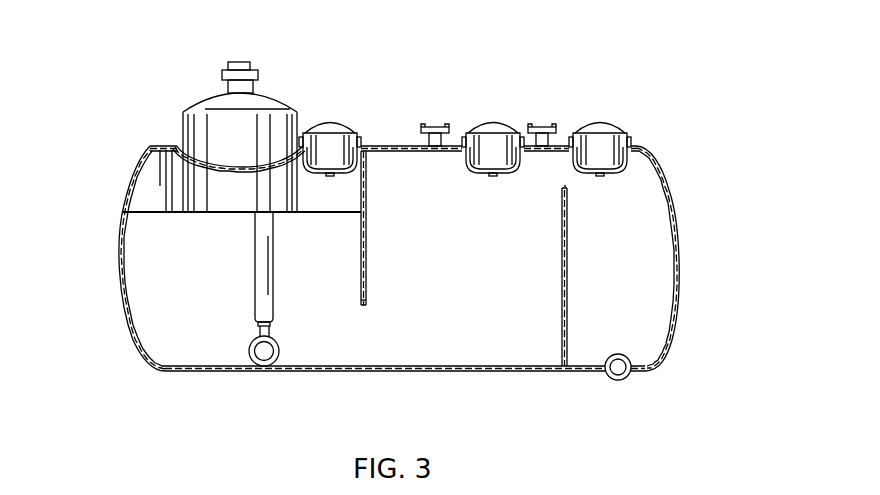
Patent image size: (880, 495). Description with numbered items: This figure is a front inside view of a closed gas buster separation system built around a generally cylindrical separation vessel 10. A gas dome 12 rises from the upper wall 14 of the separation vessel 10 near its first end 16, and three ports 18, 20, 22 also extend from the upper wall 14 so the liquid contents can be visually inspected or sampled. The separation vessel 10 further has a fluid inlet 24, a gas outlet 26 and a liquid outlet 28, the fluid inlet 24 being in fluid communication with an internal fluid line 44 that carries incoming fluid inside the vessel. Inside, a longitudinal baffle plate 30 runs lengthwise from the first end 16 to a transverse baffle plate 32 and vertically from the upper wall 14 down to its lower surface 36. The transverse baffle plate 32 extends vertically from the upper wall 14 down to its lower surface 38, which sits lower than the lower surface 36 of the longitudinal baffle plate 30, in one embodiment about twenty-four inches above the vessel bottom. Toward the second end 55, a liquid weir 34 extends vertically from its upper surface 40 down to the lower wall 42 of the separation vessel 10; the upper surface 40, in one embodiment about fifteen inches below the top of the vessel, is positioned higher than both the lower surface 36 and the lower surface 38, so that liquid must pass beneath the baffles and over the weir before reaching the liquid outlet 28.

The separation vessel 10 is at (137, 87).
The gas dome 12 is at (267, 94).
The upper wall 14 is at (401, 146).
The first end 16 is at (119, 286).
The port 18 is at (322, 122).
The port 20 is at (487, 122).
The port 22 is at (597, 122).
The fluid inlet 24 is at (264, 351).
The gas outlet 26 is at (241, 62).
The liquid outlet 28 is at (619, 367).
The longitudinal baffle plate 30 is at (148, 180).
The transverse baffle plate 32 is at (366, 165).
The liquid weir 34 is at (568, 342).
The lower surface 36 is at (150, 213).
The lower surface 38 is at (364, 306).
The upper surface 40 is at (565, 188).
The lower wall 42 is at (428, 373).
The internal fluid line 44 is at (254, 292).
The second end 55 is at (681, 294).